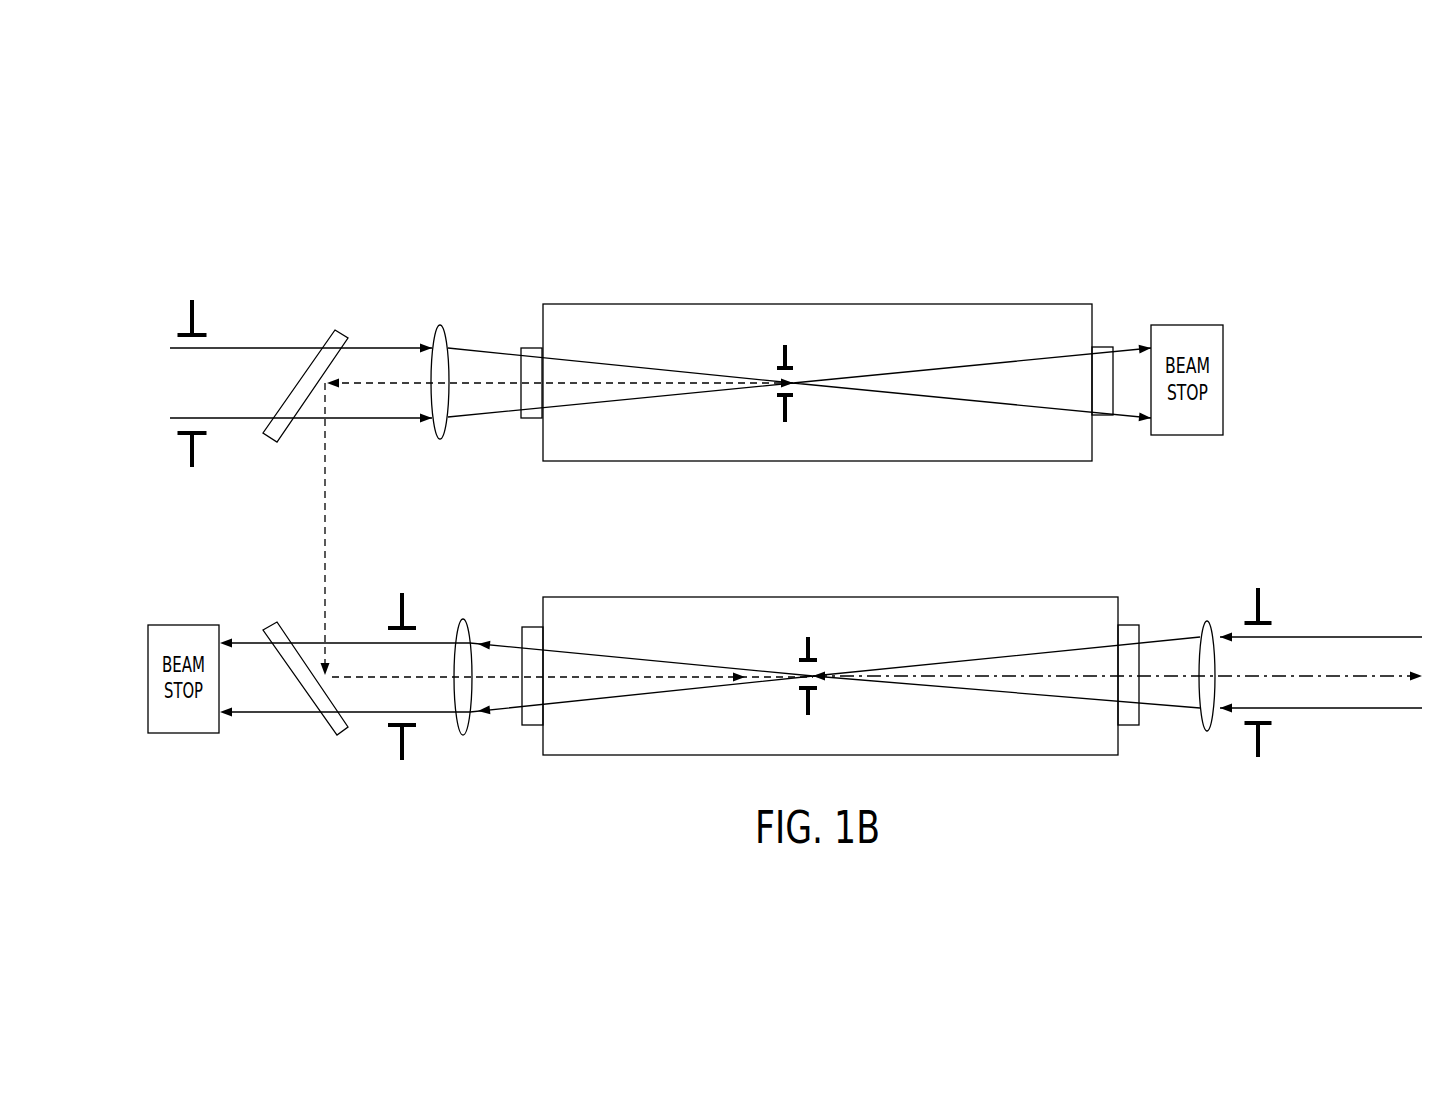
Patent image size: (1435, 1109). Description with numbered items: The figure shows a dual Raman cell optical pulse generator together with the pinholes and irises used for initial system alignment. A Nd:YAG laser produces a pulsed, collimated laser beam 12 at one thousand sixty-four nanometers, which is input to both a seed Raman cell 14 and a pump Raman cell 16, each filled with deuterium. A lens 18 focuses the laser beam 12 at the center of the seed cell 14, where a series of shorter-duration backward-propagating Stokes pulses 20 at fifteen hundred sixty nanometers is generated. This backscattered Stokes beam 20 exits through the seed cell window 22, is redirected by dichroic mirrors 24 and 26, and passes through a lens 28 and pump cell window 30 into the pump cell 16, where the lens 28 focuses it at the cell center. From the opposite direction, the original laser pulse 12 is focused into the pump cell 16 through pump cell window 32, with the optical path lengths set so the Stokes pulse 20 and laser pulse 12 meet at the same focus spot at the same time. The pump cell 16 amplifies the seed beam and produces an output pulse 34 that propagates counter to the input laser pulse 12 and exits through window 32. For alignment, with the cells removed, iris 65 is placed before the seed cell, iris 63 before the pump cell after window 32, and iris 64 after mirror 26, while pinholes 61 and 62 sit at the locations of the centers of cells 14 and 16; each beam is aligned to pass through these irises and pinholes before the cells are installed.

The laser beam 12 is at (262, 363).
The seed Raman cell 14 is at (640, 315).
The pump Raman cell 16 is at (640, 608).
The lens 18 is at (440, 326).
The Stokes pulses 20 is at (327, 465).
The seed cell window 22 is at (528, 348).
The dichroic mirror 24 is at (340, 330).
The dichroic mirror 26 is at (338, 733).
The lens 28 is at (462, 742).
The pump cell window 30 is at (533, 717).
The pump cell window 32 is at (1128, 630).
The output pulse 34 is at (1185, 677).
The pinhole 61 is at (788, 352).
The pinhole 62 is at (812, 648).
The iris 63 is at (1255, 598).
The iris 64 is at (402, 748).
The iris 65 is at (189, 312).